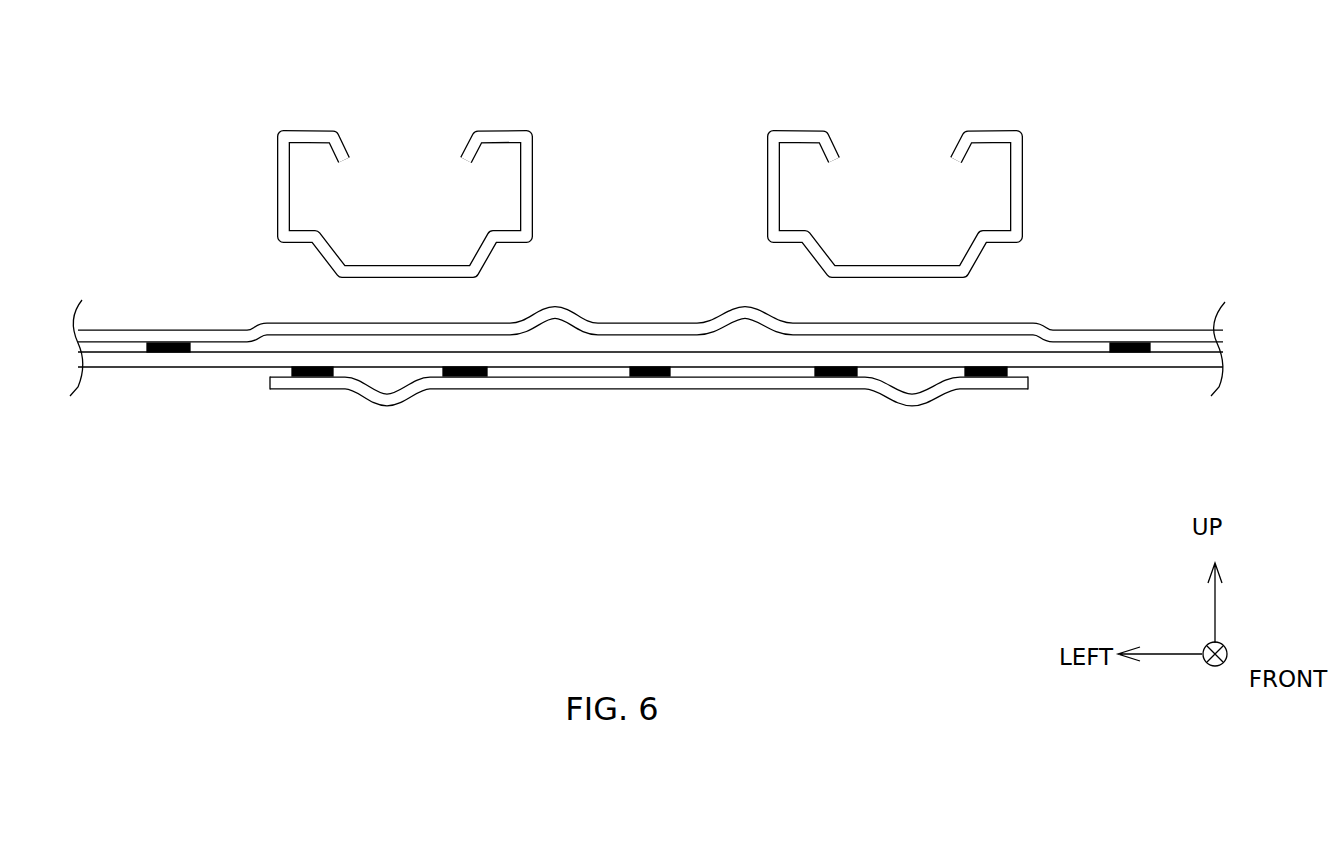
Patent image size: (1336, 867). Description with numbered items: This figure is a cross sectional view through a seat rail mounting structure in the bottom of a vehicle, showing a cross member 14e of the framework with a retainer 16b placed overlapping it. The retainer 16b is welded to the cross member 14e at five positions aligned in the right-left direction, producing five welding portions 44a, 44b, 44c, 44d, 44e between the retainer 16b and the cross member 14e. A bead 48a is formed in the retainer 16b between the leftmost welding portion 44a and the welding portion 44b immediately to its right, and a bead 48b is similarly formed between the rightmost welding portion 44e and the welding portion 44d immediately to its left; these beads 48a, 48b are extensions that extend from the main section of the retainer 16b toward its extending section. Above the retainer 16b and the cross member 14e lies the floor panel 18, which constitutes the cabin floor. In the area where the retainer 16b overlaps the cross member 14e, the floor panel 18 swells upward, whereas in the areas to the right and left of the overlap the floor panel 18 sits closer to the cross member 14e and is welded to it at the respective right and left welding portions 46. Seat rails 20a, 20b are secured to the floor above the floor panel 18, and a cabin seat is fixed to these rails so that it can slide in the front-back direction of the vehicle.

The seat rail 20a is at (510, 130).
The seat rail 20b is at (1003, 130).
The floor panel 18 is at (626, 322).
The cross member 14e is at (157, 368).
The retainer 16b is at (723, 392).
The welding portion 46 is at (183, 343).
The welding portion 44a is at (317, 376).
The welding portion 44b is at (475, 377).
The welding portion 44c is at (660, 377).
The welding portion 44d is at (827, 377).
The welding portion 44e is at (990, 377).
The bead 48a is at (389, 406).
The bead 48b is at (913, 406).